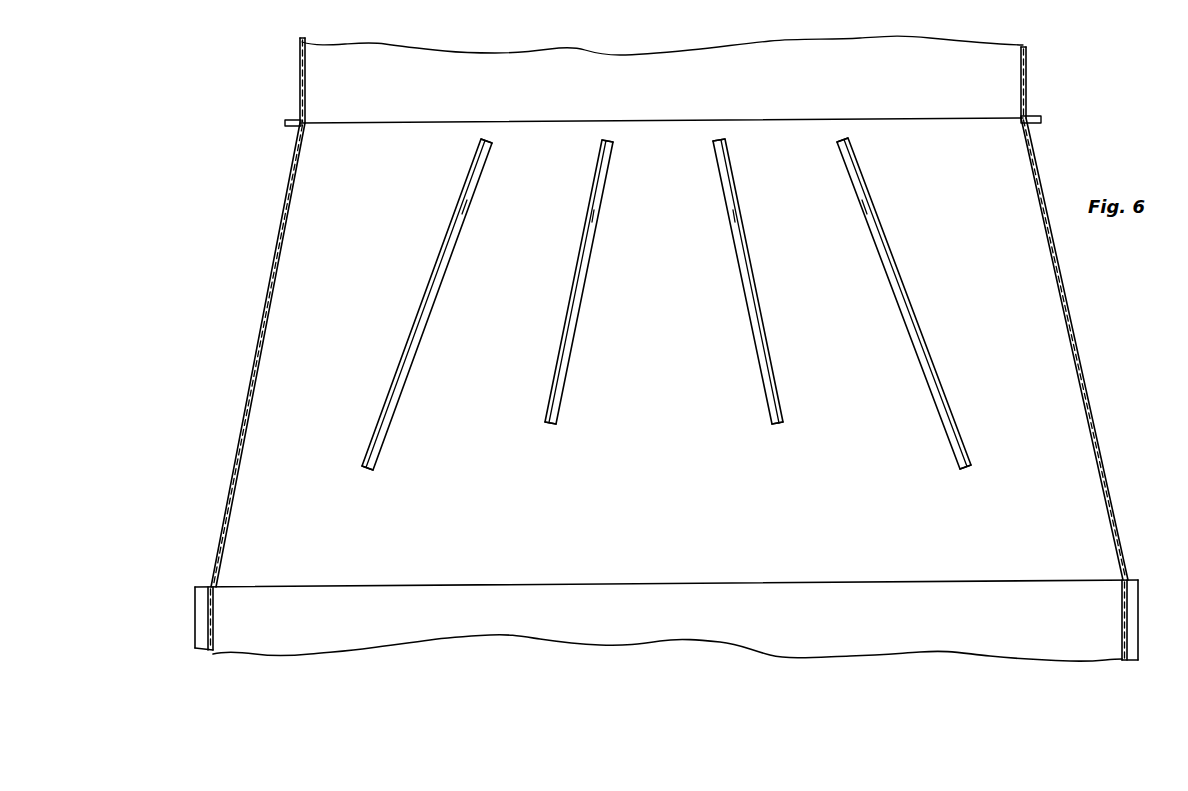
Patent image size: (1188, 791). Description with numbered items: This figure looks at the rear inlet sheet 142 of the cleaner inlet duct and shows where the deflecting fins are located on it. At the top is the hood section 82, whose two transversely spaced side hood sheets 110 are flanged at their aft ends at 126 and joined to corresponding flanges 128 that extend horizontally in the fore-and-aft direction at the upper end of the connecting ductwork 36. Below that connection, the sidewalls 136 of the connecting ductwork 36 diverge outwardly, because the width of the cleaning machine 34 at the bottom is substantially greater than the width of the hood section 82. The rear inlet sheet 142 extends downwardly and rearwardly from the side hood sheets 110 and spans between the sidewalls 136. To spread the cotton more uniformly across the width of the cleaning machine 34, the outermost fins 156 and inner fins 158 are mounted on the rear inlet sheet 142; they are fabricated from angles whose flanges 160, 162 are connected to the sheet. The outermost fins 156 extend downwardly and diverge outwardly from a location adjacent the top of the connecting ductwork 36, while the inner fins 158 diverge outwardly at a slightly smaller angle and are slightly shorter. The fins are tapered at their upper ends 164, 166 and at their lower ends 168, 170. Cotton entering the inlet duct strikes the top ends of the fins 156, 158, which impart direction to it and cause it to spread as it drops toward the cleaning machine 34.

The cleaning machine 34 is at (190, 636).
The connecting ductwork 36 is at (246, 284).
The hood section 82 is at (258, 55).
The side hood sheets 110 is at (299, 83).
The flange 126 is at (290, 121).
The flange 128 is at (291, 128).
The sidewalls 136 is at (240, 411).
The rear inlet sheet 142 is at (676, 94).
The outermost fins 156 is at (470, 178).
The inner fins 158 is at (720, 172).
The flange 160 is at (463, 216).
The flange 162 is at (724, 224).
The tapered upper end 164 is at (478, 153).
The tapered upper end 166 is at (601, 153).
The tapered lower end 168 is at (363, 459).
The tapered lower end 170 is at (550, 417).